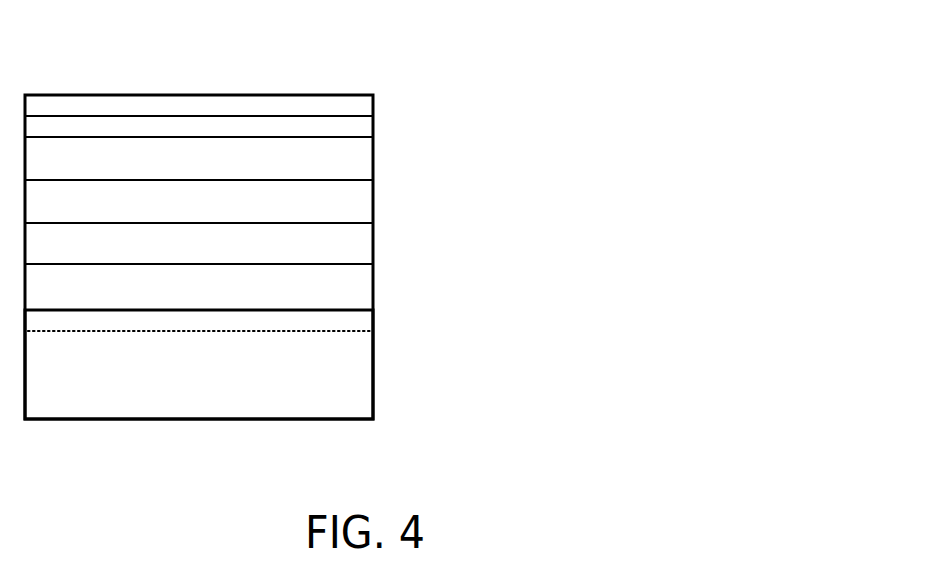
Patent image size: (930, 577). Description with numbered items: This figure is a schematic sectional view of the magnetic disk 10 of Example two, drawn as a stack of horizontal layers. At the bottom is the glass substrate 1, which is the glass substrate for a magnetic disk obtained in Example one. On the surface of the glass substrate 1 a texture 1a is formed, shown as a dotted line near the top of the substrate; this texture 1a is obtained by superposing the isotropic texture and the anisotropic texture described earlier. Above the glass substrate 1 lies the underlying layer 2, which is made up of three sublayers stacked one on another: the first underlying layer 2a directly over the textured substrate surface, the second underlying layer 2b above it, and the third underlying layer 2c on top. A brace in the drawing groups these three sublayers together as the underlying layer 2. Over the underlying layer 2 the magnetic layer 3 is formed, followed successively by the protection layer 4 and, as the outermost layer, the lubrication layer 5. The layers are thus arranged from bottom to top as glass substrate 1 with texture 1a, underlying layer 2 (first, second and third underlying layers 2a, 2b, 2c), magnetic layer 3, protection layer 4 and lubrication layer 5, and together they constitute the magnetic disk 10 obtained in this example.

The magnetic disk 10 is at (410, 222).
The lubrication layer 5 is at (381, 108).
The protection layer 4 is at (381, 130).
The magnetic layer 3 is at (381, 151).
The underlying layer 2 is at (410, 244).
The third underlying layer 2c is at (381, 205).
The second underlying layer 2b is at (381, 245).
The first underlying layer 2a is at (381, 291).
The glass substrate 1 is at (403, 364).
The texture 1a is at (381, 325).